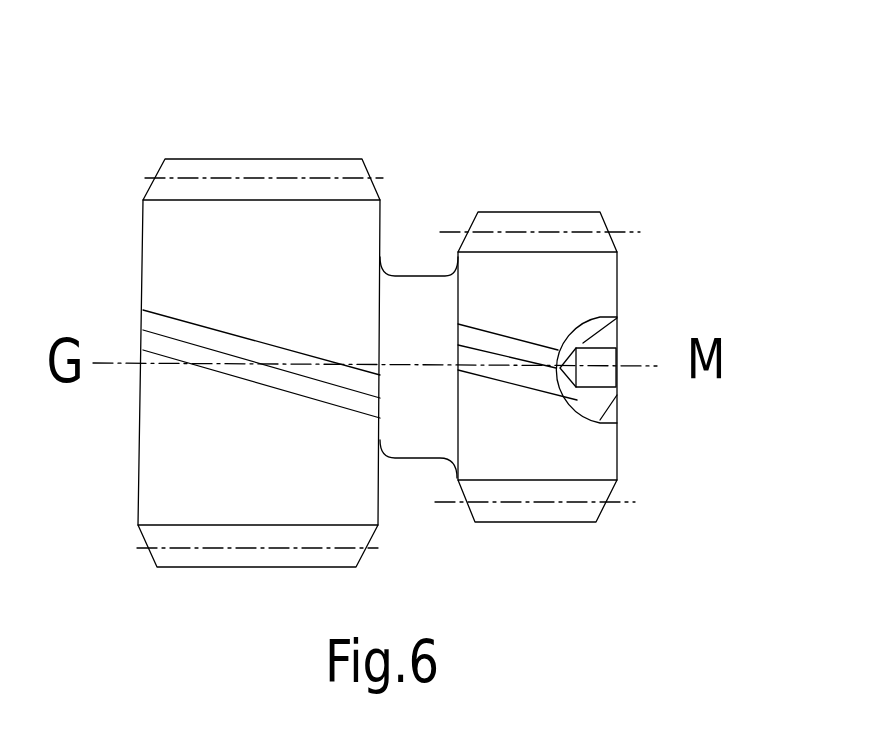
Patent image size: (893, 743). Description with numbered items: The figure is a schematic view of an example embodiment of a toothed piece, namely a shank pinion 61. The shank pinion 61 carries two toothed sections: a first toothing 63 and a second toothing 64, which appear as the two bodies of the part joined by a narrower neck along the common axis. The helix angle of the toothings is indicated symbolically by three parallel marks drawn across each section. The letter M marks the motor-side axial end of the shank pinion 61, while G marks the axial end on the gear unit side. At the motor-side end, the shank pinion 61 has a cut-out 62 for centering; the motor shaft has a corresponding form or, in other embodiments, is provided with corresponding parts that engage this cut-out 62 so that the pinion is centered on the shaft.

The shank pinion 61 is at (441, 295).
The cut-out 62 is at (598, 358).
The first toothing 63 is at (520, 225).
The second toothing 64 is at (195, 168).